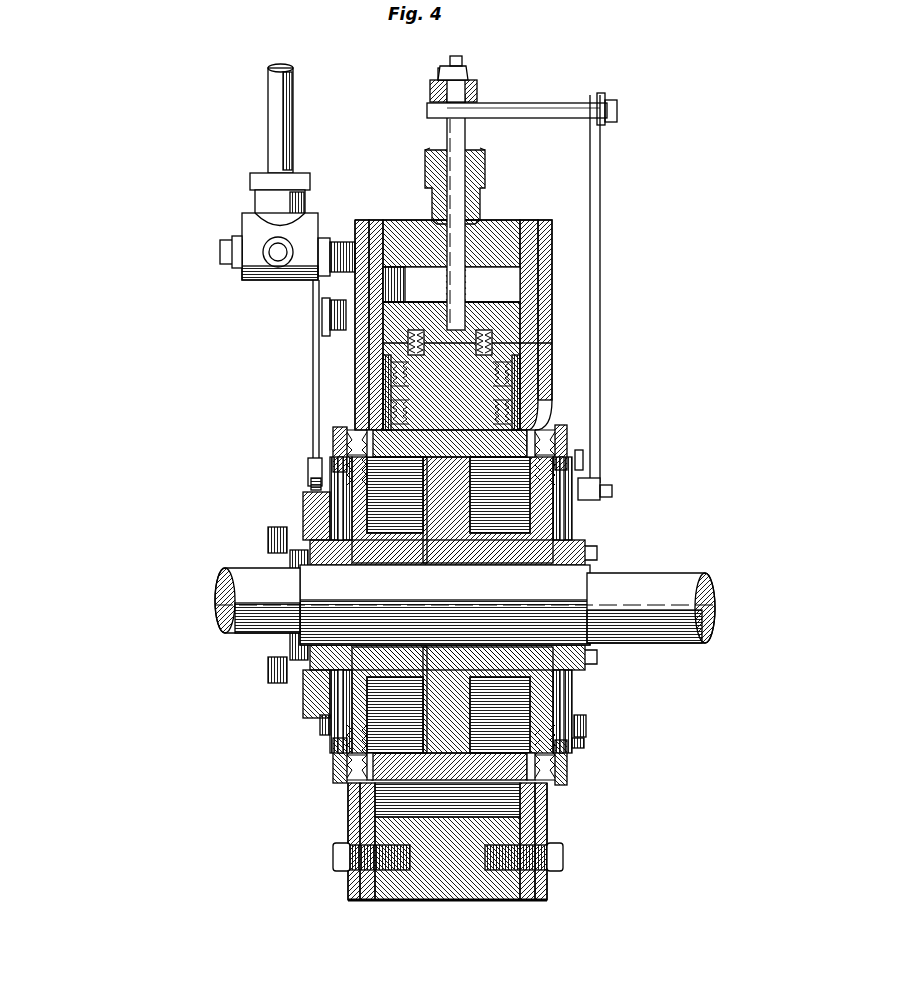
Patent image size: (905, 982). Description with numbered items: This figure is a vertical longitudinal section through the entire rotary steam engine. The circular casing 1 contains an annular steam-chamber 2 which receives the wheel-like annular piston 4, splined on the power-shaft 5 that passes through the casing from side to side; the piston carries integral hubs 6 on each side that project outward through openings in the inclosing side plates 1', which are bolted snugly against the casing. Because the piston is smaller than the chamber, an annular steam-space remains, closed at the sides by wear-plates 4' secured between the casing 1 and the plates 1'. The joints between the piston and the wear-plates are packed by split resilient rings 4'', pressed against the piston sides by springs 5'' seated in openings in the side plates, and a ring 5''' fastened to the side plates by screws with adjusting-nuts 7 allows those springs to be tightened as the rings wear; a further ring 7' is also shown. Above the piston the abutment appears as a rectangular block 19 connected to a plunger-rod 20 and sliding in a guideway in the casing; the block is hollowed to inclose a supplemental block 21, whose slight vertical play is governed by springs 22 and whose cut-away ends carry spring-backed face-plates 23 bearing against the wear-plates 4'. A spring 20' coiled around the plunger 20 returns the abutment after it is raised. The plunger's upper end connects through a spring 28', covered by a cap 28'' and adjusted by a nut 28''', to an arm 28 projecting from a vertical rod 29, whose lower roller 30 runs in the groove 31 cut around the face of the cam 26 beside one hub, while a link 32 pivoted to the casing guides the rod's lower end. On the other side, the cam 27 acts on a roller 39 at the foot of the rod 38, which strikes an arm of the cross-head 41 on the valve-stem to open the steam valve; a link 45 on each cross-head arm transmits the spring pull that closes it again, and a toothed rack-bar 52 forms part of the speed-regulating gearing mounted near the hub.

The casing 1 is at (463, 565).
The side plates 1' is at (448, 554).
The annular steam-chamber 2 is at (560, 813).
The annular piston 4 is at (452, 605).
The wear-plates 4' is at (463, 566).
The split resilient rings 4'' is at (446, 609).
The power-shaft 5 is at (465, 605).
The springs 5'' is at (443, 595).
The ring 5''' is at (455, 611).
The hubs 6 is at (453, 605).
The adjusting-nuts 7 is at (308, 733).
The ring 7' is at (600, 737).
The block 19 is at (510, 332).
The plunger-rod 20 is at (443, 212).
The spring 20' is at (470, 284).
The supplemental block 21 is at (490, 392).
The springs 22 is at (415, 330).
The face-plates 23 is at (515, 410).
The cam 26 is at (580, 530).
The cam 27 is at (310, 511).
The arm 28 is at (517, 101).
The spring 28' is at (476, 83).
The cap 28'' is at (420, 82).
The nut 28''' is at (468, 58).
The vertical rod 29 is at (600, 321).
The roller 30 is at (600, 493).
The groove 31 is at (586, 724).
The link 32 is at (268, 119).
The rod 38 is at (318, 379).
The roller 39 is at (308, 479).
The cross-head 41 is at (308, 279).
The link 45 is at (335, 321).
The rack-bar 52 is at (612, 452).